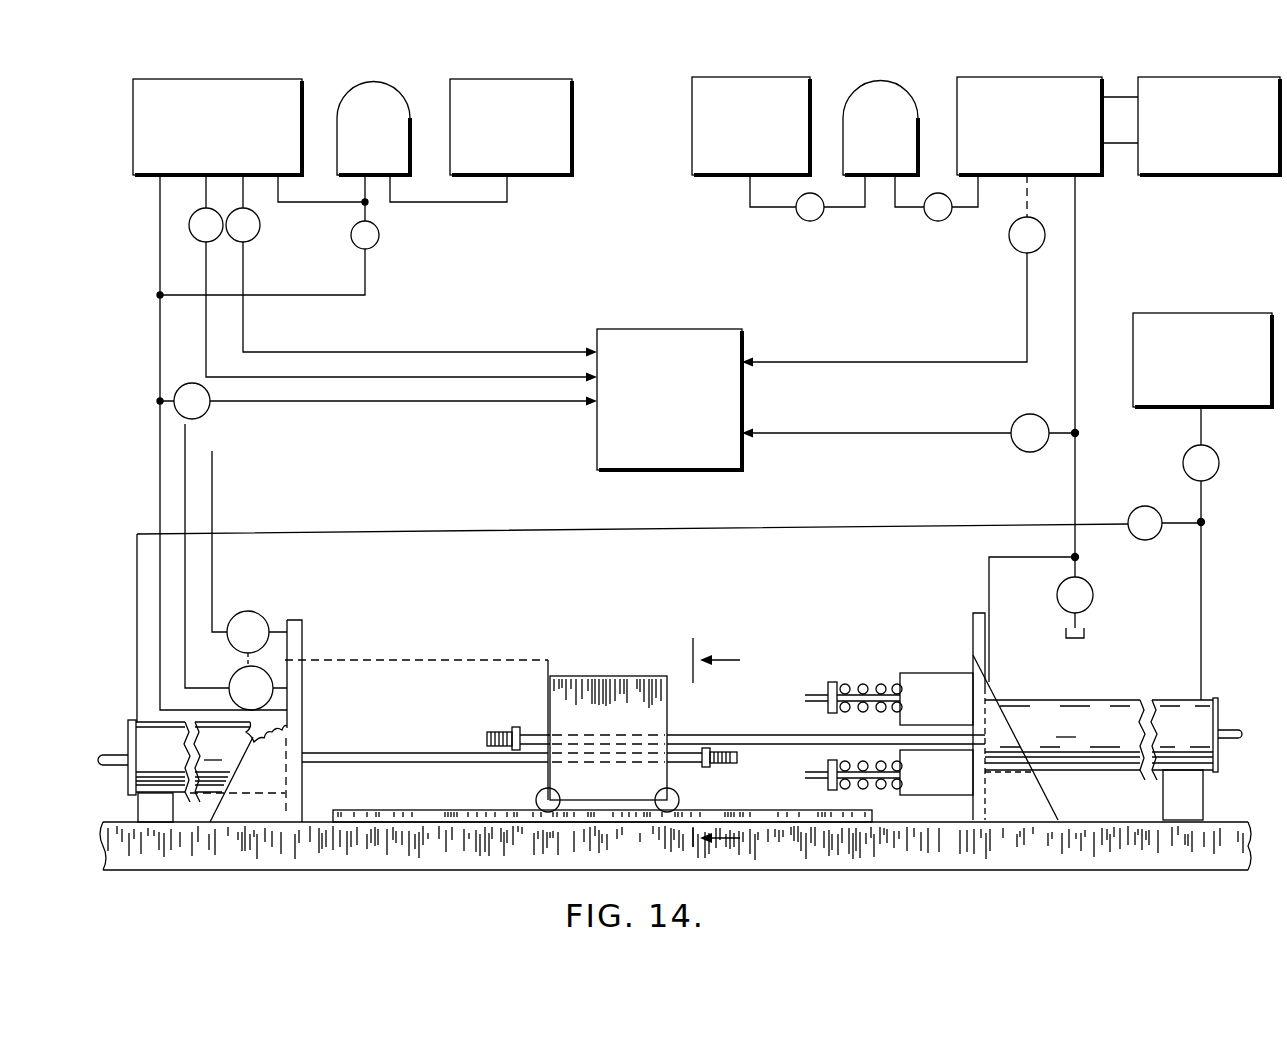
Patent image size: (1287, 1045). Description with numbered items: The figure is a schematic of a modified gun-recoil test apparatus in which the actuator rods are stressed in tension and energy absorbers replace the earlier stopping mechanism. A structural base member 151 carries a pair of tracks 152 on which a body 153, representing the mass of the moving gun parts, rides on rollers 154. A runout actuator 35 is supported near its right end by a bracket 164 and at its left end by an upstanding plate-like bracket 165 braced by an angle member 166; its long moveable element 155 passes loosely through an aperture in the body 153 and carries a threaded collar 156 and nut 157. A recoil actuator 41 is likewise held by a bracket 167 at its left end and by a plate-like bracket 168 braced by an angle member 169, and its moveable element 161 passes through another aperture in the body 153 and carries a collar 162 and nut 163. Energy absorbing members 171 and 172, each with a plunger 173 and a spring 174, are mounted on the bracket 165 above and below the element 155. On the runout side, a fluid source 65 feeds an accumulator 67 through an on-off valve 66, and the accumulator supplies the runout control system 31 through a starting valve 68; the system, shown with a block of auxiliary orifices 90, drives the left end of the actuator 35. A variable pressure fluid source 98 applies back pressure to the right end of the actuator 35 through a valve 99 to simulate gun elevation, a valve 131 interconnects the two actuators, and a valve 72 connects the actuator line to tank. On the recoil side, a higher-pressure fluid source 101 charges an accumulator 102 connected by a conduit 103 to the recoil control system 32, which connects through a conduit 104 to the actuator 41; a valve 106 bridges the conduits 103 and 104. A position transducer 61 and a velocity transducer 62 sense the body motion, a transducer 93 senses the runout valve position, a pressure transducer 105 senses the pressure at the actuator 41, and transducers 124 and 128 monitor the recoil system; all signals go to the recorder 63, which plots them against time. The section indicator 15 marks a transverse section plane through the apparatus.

The recoil control system 32 is at (257, 79).
The accumulator 102 is at (376, 83).
The fluid source 101 is at (527, 79).
The conduit 103 is at (283, 194).
The on-off valve 106 is at (378, 245).
The transducer 128 is at (192, 236).
The transducer 124 is at (261, 234).
The conduit 104 is at (158, 458).
The pressure transducer 105 is at (186, 381).
The fluid source 65 is at (767, 77).
The accumulator 67 is at (886, 81).
The on-off valve 66 is at (802, 220).
The on-off valve 68 is at (936, 220).
The runout control system 31 is at (1037, 77).
The auxiliary orifices 90 is at (1231, 77).
The transducer 93 is at (1010, 239).
The recorder 63 is at (696, 329).
The variable pressure fluid source 98 is at (1219, 313).
The on-off valve 99 is at (1219, 470).
The on-off valve 131 is at (1135, 510).
The on-off valve 72 is at (1090, 591).
The position transducer 61 is at (254, 614).
The velocity transducer 62 is at (233, 680).
The upstanding plate-like bracket 168 is at (304, 623).
The actuator 41 is at (192, 668).
The bracket 167 is at (138, 800).
The angle member 169 is at (260, 822).
The moveable element 161 is at (400, 750).
The nut 157 is at (498, 732).
The collar 156 is at (514, 726).
The moveable element 155 is at (778, 735).
The body 153 is at (608, 676).
The rollers 154 is at (538, 794).
The collar 162 is at (687, 798).
The nut 163 is at (698, 787).
The tracks 152 is at (814, 822).
The section line 15 is at (711, 741).
The plunger 173 is at (818, 683).
The spring 174 is at (886, 676).
The energy absorbing member 171 is at (942, 673).
The energy absorbing member 172 is at (940, 796).
The upstanding plate-like bracket 165 is at (974, 624).
The angle member 166 is at (994, 816).
The actuator 35 is at (1113, 739).
The bracket 164 is at (1206, 792).
The structural base member 151 is at (1012, 870).